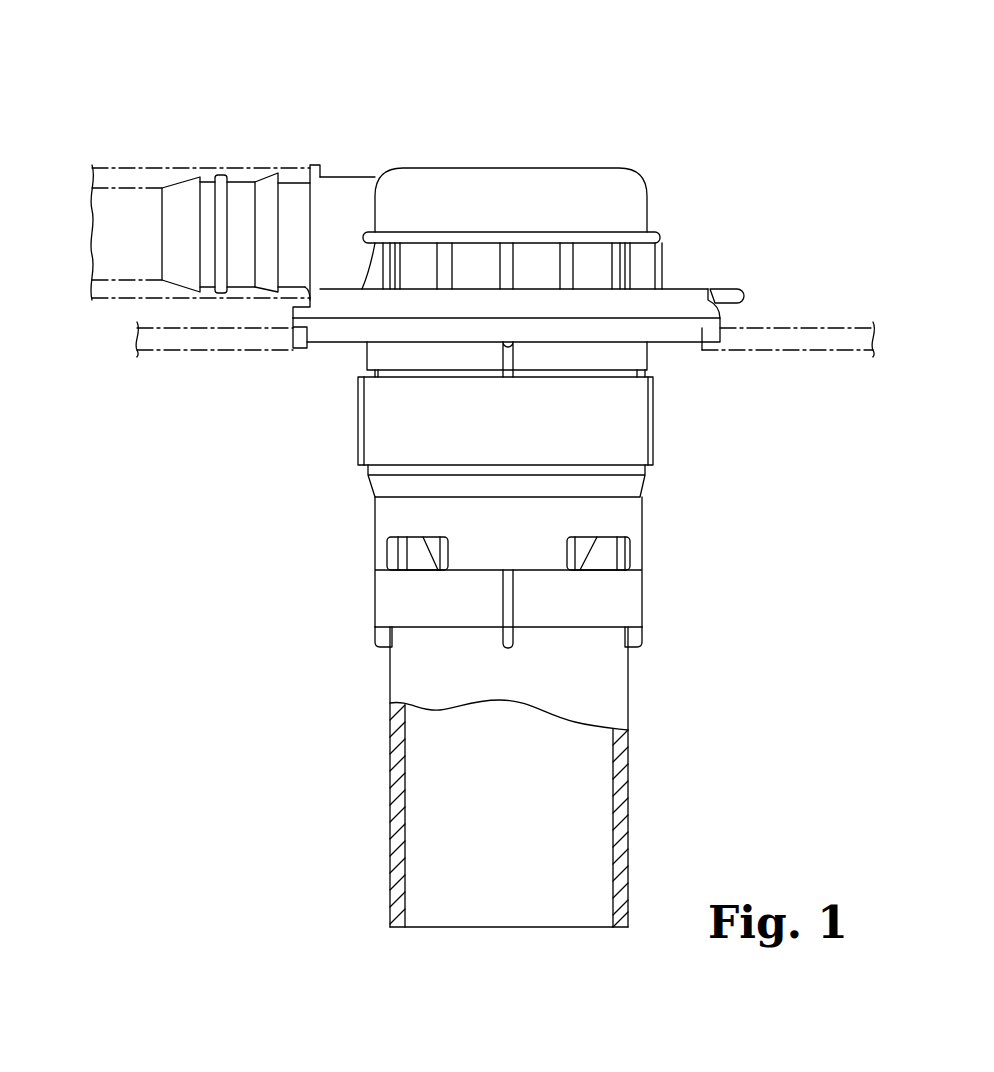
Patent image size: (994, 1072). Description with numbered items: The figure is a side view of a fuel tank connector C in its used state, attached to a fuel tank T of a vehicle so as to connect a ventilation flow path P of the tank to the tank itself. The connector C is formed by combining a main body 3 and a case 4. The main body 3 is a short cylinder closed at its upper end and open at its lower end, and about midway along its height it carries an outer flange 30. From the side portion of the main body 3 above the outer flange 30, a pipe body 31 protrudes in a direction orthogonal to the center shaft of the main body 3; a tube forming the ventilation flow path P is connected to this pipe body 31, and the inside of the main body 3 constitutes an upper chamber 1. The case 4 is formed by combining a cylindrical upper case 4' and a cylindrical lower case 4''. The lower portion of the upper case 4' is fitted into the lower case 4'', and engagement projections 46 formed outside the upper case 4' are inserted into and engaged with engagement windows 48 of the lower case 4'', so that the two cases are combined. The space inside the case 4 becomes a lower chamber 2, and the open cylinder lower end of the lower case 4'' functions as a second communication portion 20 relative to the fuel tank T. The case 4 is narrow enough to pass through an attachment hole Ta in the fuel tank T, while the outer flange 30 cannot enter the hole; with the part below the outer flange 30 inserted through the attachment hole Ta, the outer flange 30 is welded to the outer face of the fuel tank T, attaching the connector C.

The ventilation flow path P is at (150, 175).
The pipe body 31 is at (237, 205).
The upper chamber 1 is at (513, 190).
The fuel tank connector C is at (526, 544).
The main body 3 is at (640, 218).
The outer flange 30 is at (672, 330).
The fuel tank T is at (802, 332).
The attachment hole Ta is at (700, 350).
The engagement projections 46 is at (417, 550).
The engagement windows 48 is at (392, 557).
The upper case 4' is at (541, 562).
The case 4 is at (526, 688).
The lower case 4'' is at (551, 777).
The lower chamber 2 is at (483, 857).
The second communication portion 20 is at (540, 927).